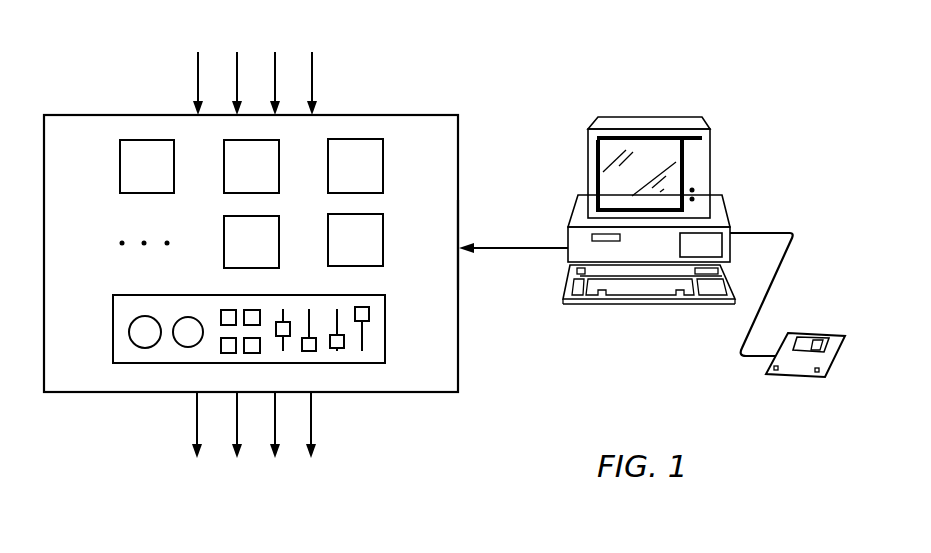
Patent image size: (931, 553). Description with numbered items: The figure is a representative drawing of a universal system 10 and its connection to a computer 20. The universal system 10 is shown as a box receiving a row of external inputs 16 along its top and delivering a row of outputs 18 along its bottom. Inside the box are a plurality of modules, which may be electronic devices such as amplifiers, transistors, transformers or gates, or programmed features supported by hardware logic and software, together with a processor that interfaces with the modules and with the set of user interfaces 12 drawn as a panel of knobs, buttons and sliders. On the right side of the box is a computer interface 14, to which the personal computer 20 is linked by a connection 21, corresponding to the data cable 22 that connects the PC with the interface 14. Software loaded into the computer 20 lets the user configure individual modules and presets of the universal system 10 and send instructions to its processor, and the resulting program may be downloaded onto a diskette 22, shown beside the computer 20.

The universal system 10 is at (122, 104).
The set of user interfaces 12 is at (137, 363).
The computer interface 14 is at (466, 242).
The external inputs 16 is at (314, 80).
The outputs 18 is at (307, 424).
The computer 20 is at (757, 144).
The communication link 21 is at (510, 250).
The data cable 22 is at (805, 334).